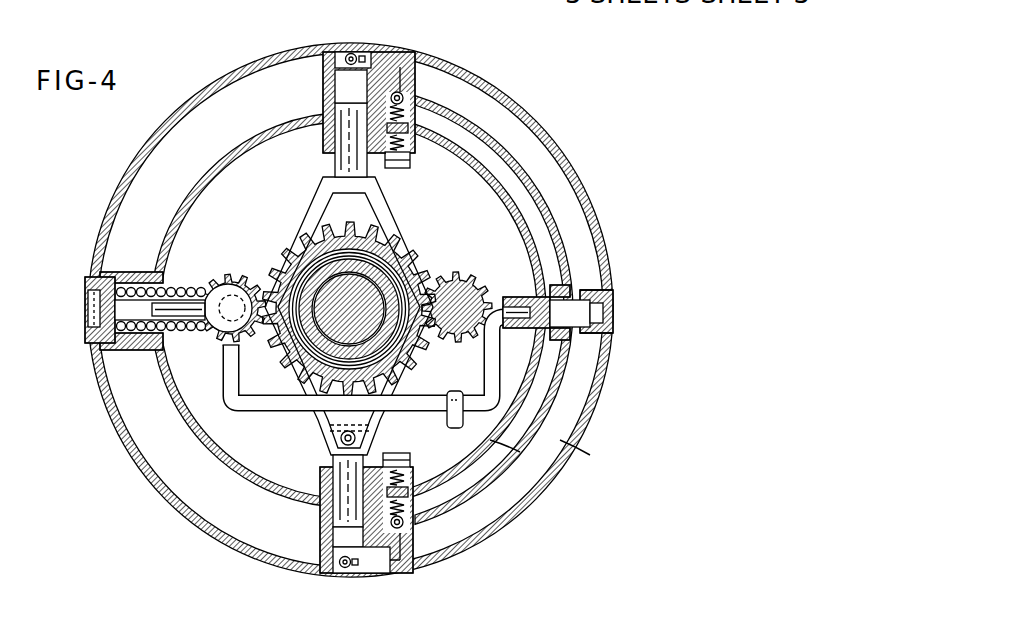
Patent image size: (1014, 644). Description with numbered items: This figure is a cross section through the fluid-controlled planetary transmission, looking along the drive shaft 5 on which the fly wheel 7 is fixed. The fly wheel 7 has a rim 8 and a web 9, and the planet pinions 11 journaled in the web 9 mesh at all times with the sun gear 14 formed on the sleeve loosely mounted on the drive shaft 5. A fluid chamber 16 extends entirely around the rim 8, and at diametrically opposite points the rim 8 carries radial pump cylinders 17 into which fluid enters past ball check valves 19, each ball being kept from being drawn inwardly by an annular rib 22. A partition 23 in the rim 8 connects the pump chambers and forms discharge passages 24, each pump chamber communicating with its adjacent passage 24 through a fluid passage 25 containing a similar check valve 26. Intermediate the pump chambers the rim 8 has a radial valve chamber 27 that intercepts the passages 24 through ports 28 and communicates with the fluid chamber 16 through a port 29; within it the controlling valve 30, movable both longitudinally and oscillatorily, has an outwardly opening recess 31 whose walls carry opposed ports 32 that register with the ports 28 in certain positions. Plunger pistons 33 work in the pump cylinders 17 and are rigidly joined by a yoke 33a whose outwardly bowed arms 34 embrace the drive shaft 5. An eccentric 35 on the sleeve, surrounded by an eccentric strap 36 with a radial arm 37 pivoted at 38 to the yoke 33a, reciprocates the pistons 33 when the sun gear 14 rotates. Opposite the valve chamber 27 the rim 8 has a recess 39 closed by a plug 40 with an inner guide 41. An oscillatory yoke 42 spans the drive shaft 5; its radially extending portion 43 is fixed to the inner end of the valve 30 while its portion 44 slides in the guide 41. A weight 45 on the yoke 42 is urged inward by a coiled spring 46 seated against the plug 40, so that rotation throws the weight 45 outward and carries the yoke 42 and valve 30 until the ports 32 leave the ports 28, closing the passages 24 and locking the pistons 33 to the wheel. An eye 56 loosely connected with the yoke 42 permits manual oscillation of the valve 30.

The drive shaft 5 is at (349, 309).
The fly wheel 7 is at (463, 70).
The rim 8 is at (578, 453).
The web 9 is at (505, 447).
The planet pinion 11 is at (229, 272).
The sun gear 14 is at (330, 233).
The fluid chamber 16 is at (353, 331).
The pump cylinder 17 is at (340, 82).
The check valve 19 is at (348, 54).
The annular rib 22 is at (373, 580).
The partition 23 is at (548, 207).
The discharge passage 24 is at (488, 152).
The fluid passage 25 is at (393, 60).
The check valve 26 is at (413, 132).
The valve chamber 27 is at (617, 296).
The port 28 is at (558, 287).
The port 29 is at (604, 312).
The controlling valve 30 is at (530, 297).
The recess 31 is at (617, 347).
The port 32 is at (610, 282).
The plunger piston 33 is at (340, 163).
The yoke 33a is at (326, 288).
The outwardly bowed arm 34 is at (286, 260).
The eccentric 35 is at (338, 363).
The eccentric strap 36 is at (302, 354).
The radial arm 37 is at (340, 393).
The pivotal connection 38 is at (90, 272).
The recess 39 is at (128, 272).
The plug 40 is at (88, 308).
The guide 41 is at (130, 316).
The oscillatory yoke 42 is at (428, 400).
The radially extending portion 43 is at (514, 320).
The radially extending portion 44 is at (168, 297).
The weight 45 is at (214, 300).
The coiled spring 46 is at (188, 323).
The eye 56 is at (452, 420).